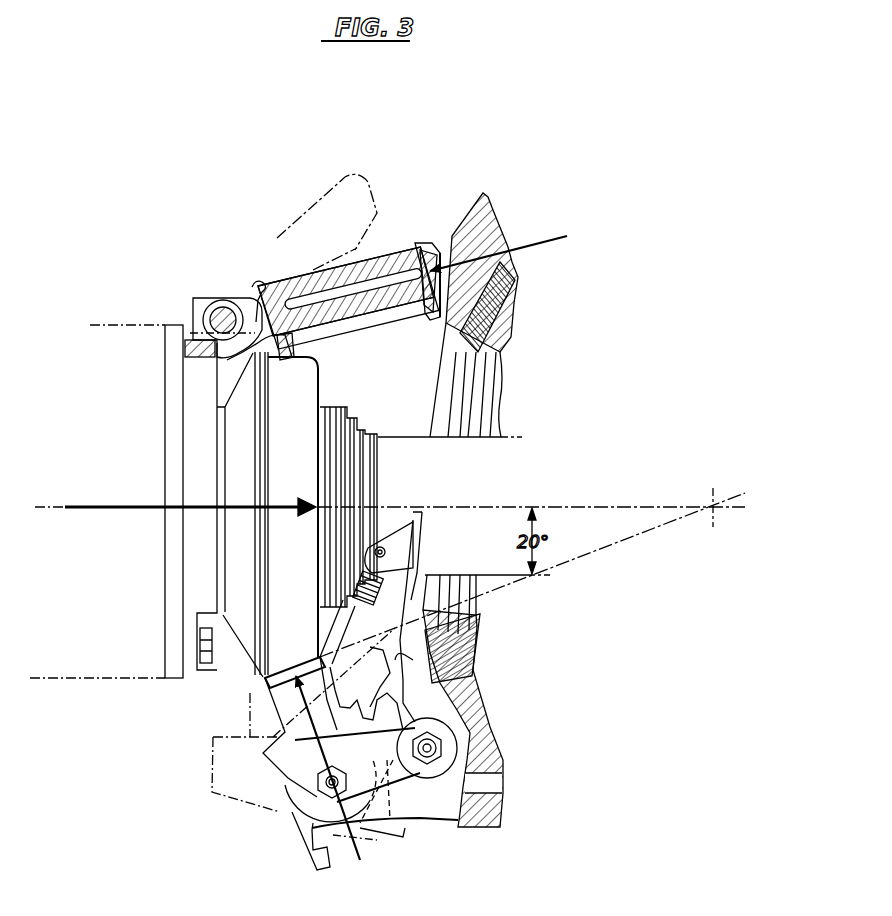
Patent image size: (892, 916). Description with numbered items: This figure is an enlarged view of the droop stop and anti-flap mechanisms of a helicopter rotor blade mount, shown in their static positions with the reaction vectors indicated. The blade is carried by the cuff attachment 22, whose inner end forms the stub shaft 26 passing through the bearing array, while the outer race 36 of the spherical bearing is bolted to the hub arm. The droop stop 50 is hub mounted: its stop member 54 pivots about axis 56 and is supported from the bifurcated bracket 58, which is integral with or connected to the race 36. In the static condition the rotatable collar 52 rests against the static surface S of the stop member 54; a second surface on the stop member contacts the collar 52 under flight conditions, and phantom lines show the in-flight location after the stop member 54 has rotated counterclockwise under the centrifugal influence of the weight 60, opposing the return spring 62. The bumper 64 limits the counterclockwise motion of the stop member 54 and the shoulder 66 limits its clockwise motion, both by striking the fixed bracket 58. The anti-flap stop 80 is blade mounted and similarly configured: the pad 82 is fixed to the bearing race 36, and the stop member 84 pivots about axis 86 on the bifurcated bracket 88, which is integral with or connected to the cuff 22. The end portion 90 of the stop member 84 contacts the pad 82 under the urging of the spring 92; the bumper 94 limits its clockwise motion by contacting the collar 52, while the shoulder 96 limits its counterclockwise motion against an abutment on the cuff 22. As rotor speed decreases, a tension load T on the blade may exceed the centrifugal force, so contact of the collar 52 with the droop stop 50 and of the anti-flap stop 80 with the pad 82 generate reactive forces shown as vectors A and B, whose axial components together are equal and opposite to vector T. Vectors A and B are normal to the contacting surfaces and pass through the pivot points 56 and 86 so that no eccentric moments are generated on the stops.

The cuff attachment 22 is at (148, 429).
The stub shaft 26 is at (400, 447).
The outer race 36 is at (474, 207).
The droop stop 50 is at (258, 818).
The rotatable collar 52 is at (313, 360).
The stop member 54 is at (262, 681).
The axis 56 is at (297, 807).
The bifurcated bracket 58 is at (422, 820).
The weight 60 is at (463, 732).
The return spring 62 is at (358, 578).
The bumper 64 is at (332, 865).
The shoulder 66 is at (427, 819).
The anti-flap stop 80 is at (258, 233).
The pad 82 is at (425, 238).
The stop member 84 is at (398, 253).
The axis 86 is at (226, 316).
The bifurcated bracket 88 is at (210, 300).
The end portion 90 is at (424, 310).
The spring 92 is at (258, 285).
The bumper 94 is at (288, 368).
The shoulder 96 is at (193, 307).
The tension load T is at (248, 500).
The reaction vector A is at (334, 780).
The reaction vector B is at (566, 232).
The static surface S is at (213, 760).